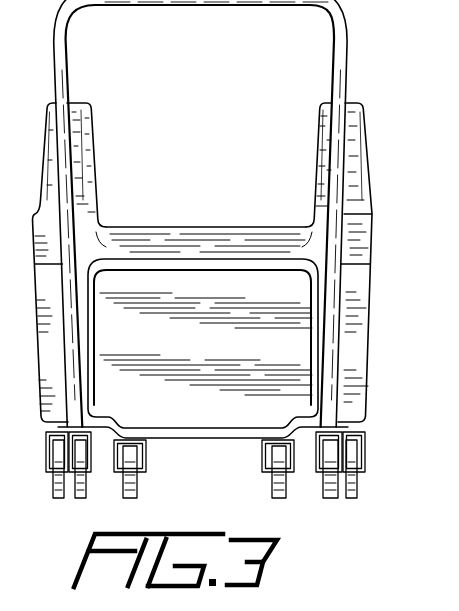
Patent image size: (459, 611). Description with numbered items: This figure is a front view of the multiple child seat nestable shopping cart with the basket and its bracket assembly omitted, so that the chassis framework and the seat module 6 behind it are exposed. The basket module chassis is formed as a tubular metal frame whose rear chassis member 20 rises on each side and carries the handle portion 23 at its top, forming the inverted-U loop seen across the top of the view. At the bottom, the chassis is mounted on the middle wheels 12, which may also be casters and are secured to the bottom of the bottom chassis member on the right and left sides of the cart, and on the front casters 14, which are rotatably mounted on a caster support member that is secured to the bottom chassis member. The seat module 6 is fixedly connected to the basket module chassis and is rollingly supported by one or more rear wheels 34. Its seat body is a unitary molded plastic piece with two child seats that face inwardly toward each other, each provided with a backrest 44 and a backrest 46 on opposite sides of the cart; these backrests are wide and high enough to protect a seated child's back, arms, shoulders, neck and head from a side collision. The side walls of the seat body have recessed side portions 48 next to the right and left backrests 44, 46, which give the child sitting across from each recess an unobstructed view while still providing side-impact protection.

The seat module 6 is at (386, 127).
The middle wheels 12 is at (326, 498).
The front casters 14 is at (122, 488).
The rear chassis member 20 is at (345, 287).
The handle portion 23 is at (242, 6).
The rear wheels 34 is at (357, 490).
The backrest 44 is at (84, 104).
The backrest 46 is at (351, 105).
The recessed side portions 48 is at (354, 212).